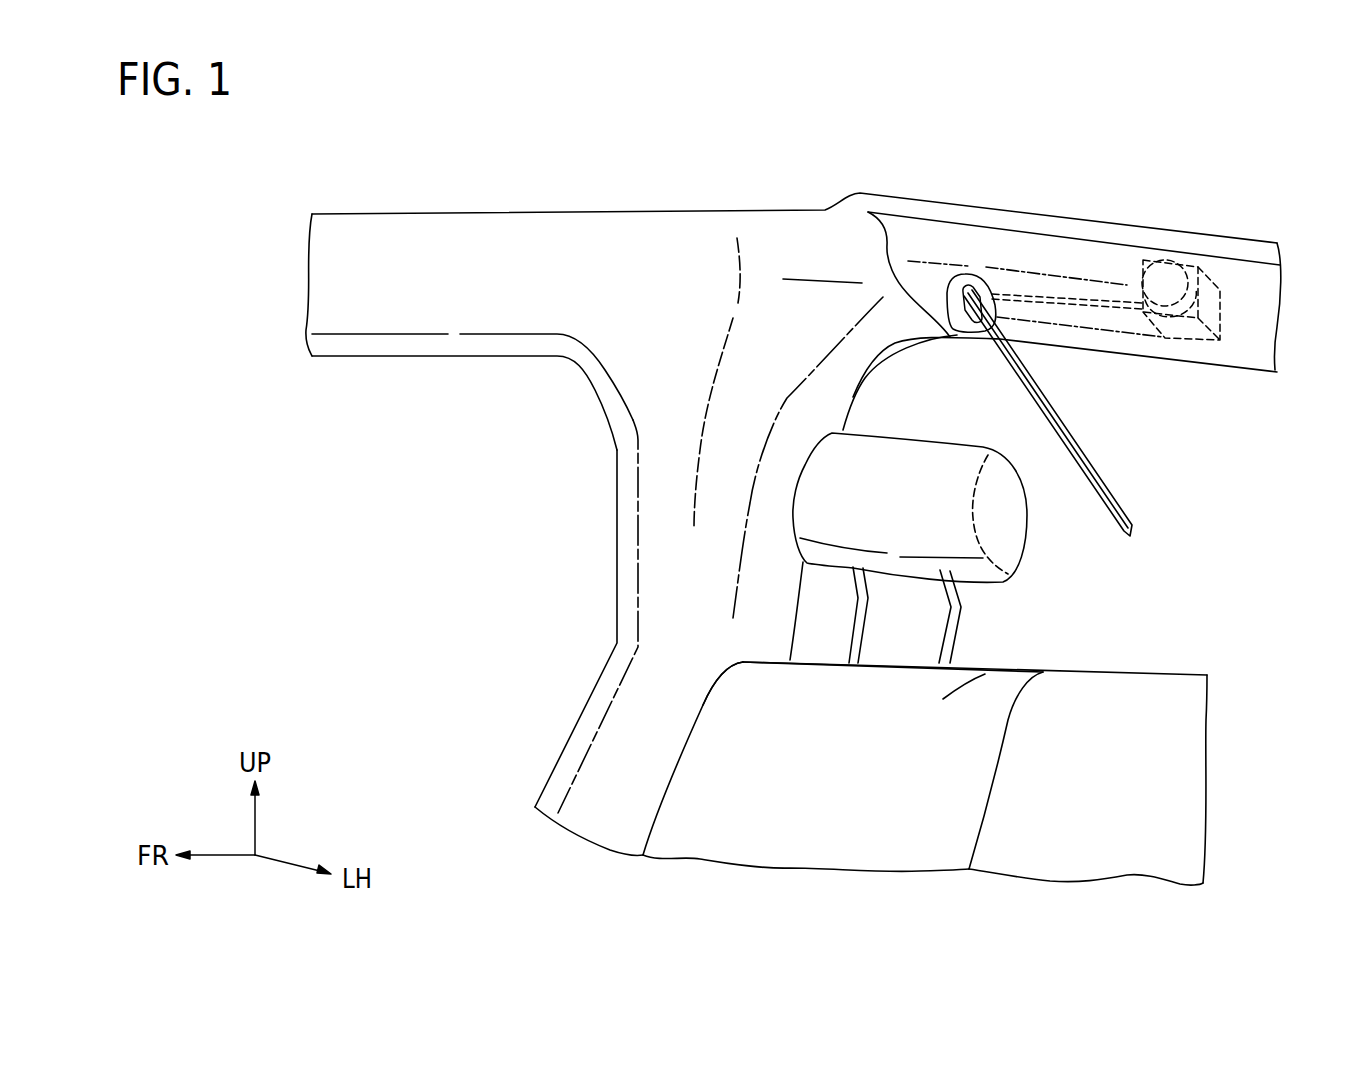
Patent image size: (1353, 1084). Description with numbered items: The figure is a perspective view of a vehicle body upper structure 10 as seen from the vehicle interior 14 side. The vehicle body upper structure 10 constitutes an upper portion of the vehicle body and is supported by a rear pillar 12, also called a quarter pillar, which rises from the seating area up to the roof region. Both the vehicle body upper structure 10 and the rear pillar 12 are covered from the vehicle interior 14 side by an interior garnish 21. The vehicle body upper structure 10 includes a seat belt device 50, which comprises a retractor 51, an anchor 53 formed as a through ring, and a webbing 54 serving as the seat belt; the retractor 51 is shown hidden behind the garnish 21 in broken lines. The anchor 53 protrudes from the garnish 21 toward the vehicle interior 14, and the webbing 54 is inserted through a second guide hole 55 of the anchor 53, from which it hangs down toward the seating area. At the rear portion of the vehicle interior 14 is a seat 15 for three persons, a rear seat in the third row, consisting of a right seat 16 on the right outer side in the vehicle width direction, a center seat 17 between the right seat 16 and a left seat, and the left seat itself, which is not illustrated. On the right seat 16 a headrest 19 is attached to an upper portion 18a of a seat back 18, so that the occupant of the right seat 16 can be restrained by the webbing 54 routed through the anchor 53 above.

The vehicle body upper structure 10 is at (1069, 212).
The rear pillar 12 is at (668, 515).
The vehicle interior 14 is at (828, 838).
The seat for three persons 15 is at (1155, 671).
The right seat 16 is at (694, 721).
The center seat 17 is at (1095, 730).
The seat back 18 is at (717, 812).
The upper portion 18a is at (943, 699).
The headrest 19 is at (898, 463).
The interior garnish 21 is at (1110, 340).
The seat belt device 50 is at (1187, 254).
The retractor 51 is at (1208, 279).
The anchor 53 is at (955, 290).
The webbing 54 is at (1072, 447).
The second guide hole 55 is at (963, 290).